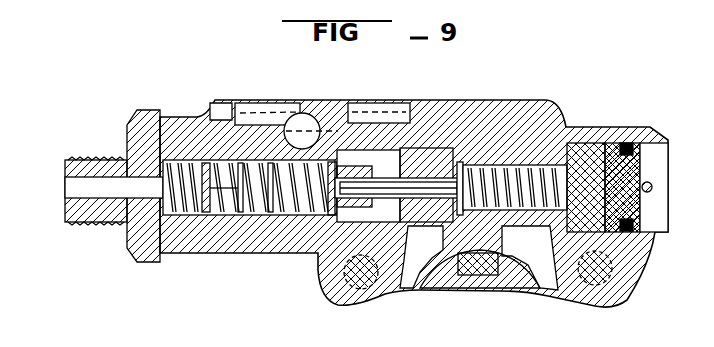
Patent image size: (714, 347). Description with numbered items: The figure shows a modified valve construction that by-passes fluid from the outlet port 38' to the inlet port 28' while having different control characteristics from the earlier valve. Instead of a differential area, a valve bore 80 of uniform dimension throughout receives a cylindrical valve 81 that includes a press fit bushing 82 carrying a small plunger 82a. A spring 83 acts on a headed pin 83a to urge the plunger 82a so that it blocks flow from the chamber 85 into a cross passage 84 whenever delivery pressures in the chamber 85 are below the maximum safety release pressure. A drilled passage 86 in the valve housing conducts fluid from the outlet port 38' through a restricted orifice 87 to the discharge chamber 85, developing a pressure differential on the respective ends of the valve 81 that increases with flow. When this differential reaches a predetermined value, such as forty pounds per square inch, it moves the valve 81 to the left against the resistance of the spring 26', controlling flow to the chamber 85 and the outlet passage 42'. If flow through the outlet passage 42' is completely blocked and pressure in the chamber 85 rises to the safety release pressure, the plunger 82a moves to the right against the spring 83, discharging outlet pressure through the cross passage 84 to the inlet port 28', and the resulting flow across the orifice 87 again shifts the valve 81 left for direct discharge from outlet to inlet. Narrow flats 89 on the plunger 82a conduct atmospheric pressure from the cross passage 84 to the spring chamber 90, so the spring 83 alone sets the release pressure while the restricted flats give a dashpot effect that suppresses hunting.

The outlet passage 42' is at (94, 186).
The spring 26' is at (185, 226).
The valve bore 80 is at (262, 223).
The chamber 85 is at (251, 158).
The restricted orifice 87 is at (212, 130).
The press fit bushing 82 is at (412, 166).
The plunger 82a is at (360, 190).
The flats 89 is at (430, 182).
The cylindrical valve 81 is at (478, 160).
The drilled passage 86 is at (493, 122).
The spring chamber 90 is at (543, 167).
The spring 83 is at (515, 173).
The headed pin 83a is at (462, 205).
The cross passage 84 is at (388, 222).
The inlet port 28' is at (421, 257).
The outlet port 38' is at (530, 258).